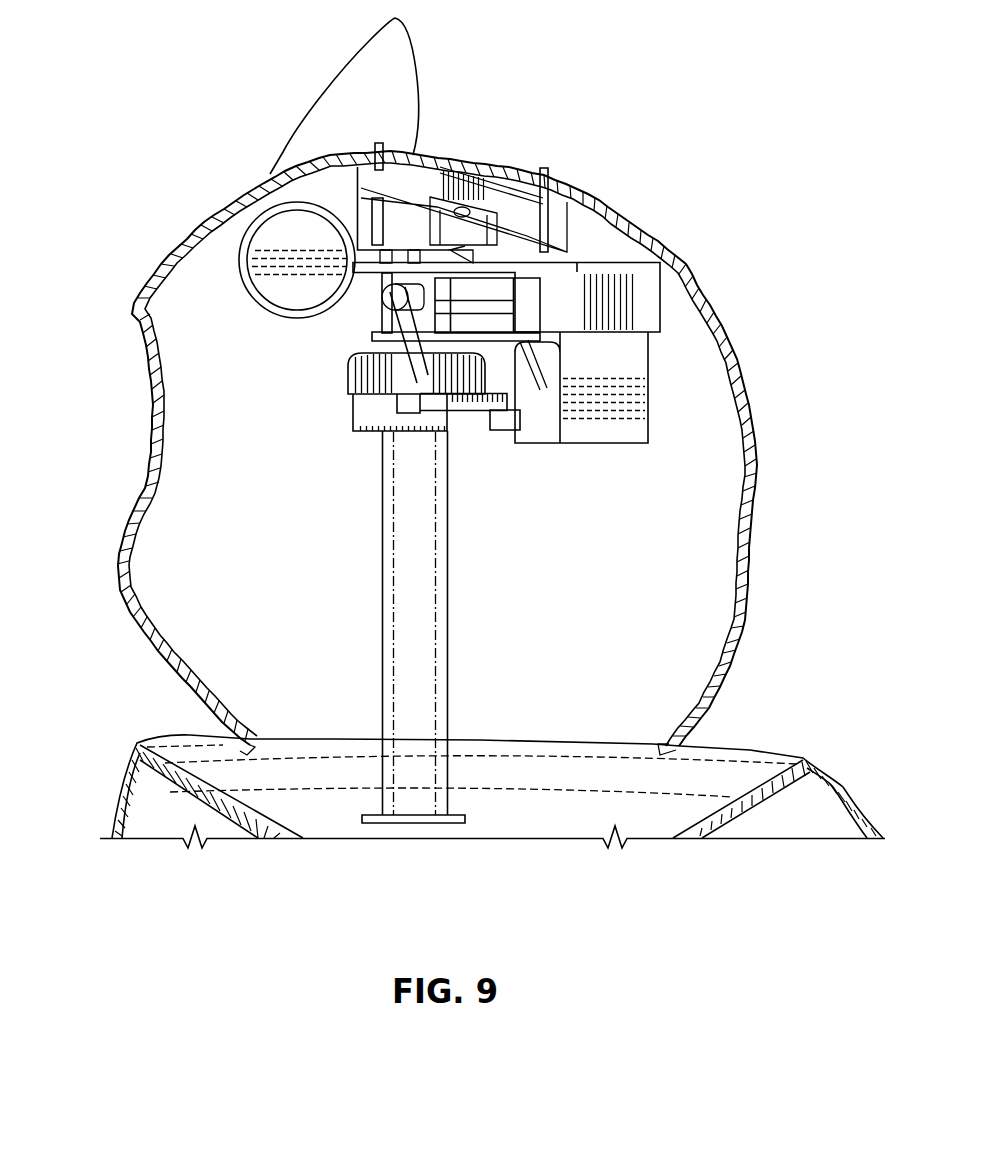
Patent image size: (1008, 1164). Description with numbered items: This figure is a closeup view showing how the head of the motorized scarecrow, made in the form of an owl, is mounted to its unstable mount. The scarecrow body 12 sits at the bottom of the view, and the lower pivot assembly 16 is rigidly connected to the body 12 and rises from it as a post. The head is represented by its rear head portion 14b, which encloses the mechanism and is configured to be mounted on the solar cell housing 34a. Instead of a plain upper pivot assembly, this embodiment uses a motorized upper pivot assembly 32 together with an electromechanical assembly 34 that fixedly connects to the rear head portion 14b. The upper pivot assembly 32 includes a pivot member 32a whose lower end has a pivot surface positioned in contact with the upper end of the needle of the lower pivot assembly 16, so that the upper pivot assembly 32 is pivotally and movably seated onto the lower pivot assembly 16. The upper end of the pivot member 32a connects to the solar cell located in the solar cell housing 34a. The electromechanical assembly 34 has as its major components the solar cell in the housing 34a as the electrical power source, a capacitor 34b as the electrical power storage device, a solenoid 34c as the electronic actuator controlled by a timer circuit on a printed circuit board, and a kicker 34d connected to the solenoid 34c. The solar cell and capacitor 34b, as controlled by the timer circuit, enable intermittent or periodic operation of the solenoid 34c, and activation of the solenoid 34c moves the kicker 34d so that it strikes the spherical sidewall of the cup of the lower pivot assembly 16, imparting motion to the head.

The scarecrow body 12 is at (118, 800).
The rear head portion 14b is at (160, 260).
The lower pivot assembly 16 is at (382, 597).
The motorized upper pivot assembly 32 is at (357, 333).
The pivot member 32a is at (352, 366).
The electromechanical assembly 34 is at (553, 444).
The solar cell housing 34a is at (407, 160).
The capacitor 34b is at (278, 272).
The solenoid 34c is at (652, 286).
The kicker 34d is at (447, 402).